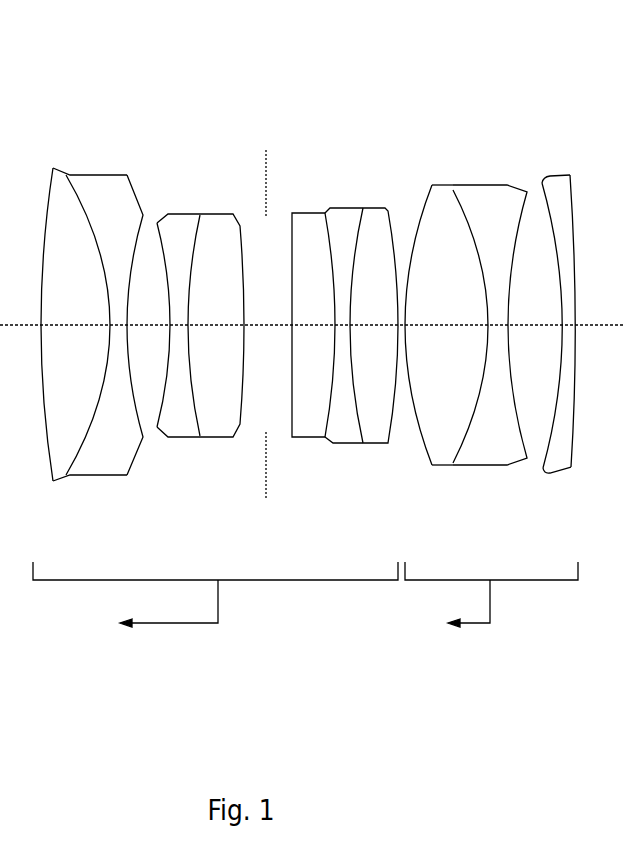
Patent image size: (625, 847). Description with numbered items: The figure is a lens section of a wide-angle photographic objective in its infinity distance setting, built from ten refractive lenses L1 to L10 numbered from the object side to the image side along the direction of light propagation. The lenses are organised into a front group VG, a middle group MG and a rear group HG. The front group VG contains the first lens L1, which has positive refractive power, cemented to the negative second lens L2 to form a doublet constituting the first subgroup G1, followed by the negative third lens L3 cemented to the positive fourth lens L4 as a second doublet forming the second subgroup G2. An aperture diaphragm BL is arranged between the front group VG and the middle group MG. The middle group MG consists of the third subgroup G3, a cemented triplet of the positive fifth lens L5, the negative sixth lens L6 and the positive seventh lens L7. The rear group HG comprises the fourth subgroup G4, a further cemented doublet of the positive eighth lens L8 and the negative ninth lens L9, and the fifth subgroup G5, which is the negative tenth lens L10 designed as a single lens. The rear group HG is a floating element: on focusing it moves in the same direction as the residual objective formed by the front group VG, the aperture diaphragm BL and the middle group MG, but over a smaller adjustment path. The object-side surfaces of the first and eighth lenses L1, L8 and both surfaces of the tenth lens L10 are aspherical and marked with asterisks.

The first lens L1 is at (61, 183).
The second lens L2 is at (105, 193).
The third lens L3 is at (178, 225).
The fourth lens L4 is at (213, 228).
The fifth lens L5 is at (306, 228).
The sixth lens L6 is at (347, 218).
The seventh lens L7 is at (377, 217).
The eighth lens L8 is at (442, 198).
The ninth lens L9 is at (487, 197).
The tenth lens L10 is at (557, 182).
The aperture diaphragm BL is at (267, 150).
The first subgroup G1 is at (42, 63).
The second subgroup G2 is at (243, 63).
The third subgroup G3 is at (285, 63).
The fourth subgroup G4 is at (405, 63).
The fifth subgroup G5 is at (573, 63).
The front group VG is at (253, 507).
The middle group MG is at (283, 507).
The rear group HG is at (578, 507).